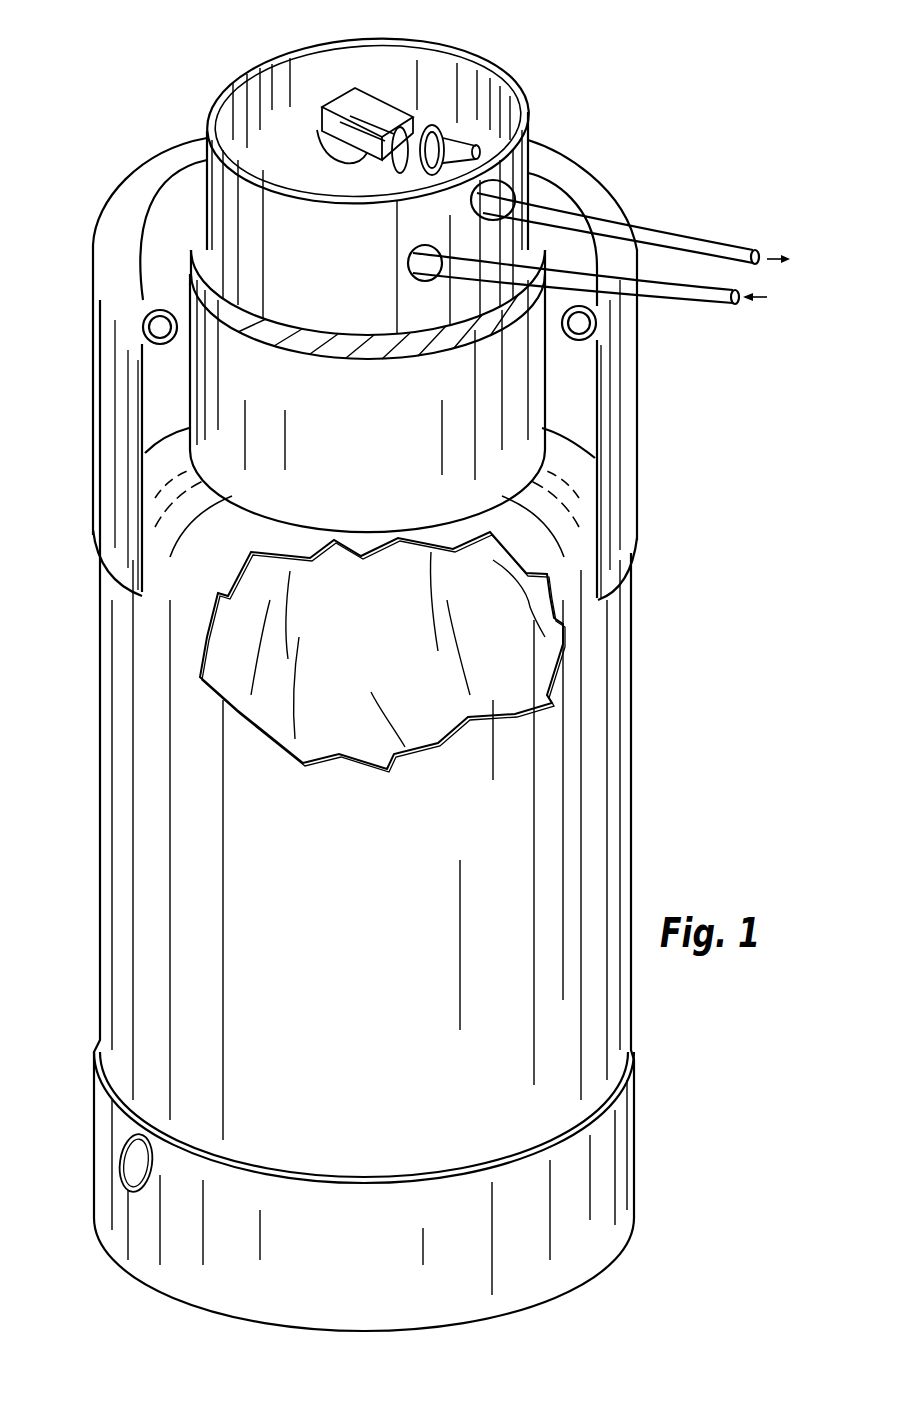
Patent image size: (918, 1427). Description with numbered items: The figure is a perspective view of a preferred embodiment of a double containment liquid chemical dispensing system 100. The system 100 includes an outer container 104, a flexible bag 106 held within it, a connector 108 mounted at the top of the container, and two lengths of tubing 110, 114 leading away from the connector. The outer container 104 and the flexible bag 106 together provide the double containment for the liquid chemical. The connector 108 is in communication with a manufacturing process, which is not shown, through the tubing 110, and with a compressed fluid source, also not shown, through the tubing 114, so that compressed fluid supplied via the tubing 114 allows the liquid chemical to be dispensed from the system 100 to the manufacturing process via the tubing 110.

The double containment liquid chemical dispensing system 100 is at (106, 174).
The outer container 104 is at (98, 640).
The flexible bag 106 is at (405, 747).
The connector 108 is at (465, 64).
The tubing 110 is at (731, 245).
The tubing 114 is at (692, 298).